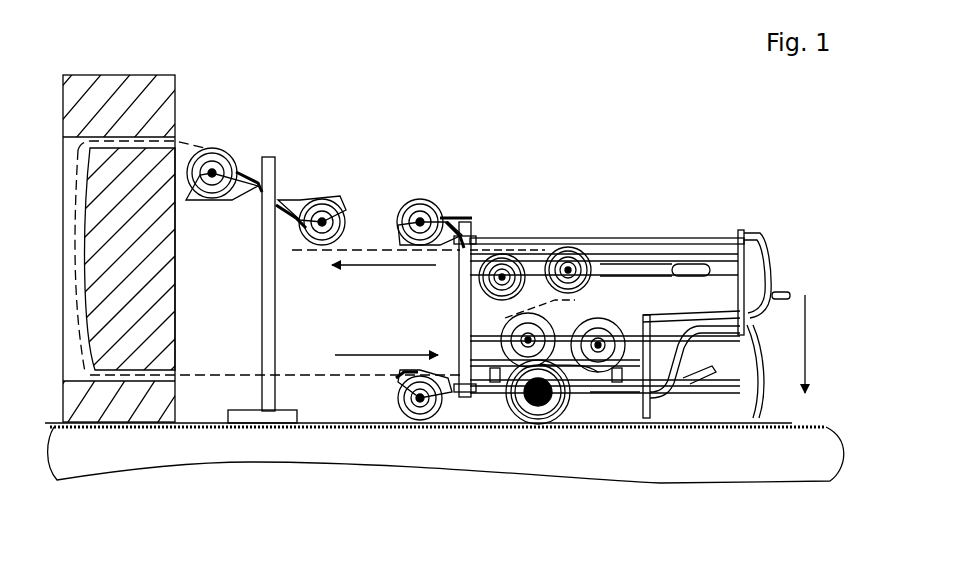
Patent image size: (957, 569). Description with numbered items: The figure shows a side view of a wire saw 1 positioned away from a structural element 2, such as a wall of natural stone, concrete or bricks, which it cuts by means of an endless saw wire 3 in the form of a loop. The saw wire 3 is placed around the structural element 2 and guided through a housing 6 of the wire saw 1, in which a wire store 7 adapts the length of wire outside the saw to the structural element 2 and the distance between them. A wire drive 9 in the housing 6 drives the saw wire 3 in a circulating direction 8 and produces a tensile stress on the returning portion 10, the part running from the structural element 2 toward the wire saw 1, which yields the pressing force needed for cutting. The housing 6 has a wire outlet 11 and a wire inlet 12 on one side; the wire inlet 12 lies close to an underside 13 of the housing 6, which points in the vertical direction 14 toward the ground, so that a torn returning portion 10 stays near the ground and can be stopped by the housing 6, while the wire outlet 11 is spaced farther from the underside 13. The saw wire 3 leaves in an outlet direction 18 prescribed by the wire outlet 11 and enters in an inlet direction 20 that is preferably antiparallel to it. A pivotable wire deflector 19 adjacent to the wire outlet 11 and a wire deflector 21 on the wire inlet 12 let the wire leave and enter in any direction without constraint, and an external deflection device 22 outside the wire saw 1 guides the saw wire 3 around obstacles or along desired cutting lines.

The wire saw 1 is at (438, 98).
The structural element 2 is at (167, 97).
The saw wire 3 is at (372, 250).
The housing 6 is at (682, 242).
The wire store 7 is at (536, 246).
The circulating direction 8 is at (234, 352).
The wire drive 9 is at (570, 302).
The returning portion 10 is at (320, 375).
The wire outlet 11 is at (478, 240).
The wire inlet 12 is at (478, 392).
The underside 13 is at (622, 392).
The vertical direction 14 is at (812, 345).
The outlet direction 18 is at (386, 270).
The wire deflector 19 is at (426, 205).
The inlet direction 20 is at (404, 353).
The wire deflector 21 is at (420, 405).
The deflection device 22 is at (272, 413).